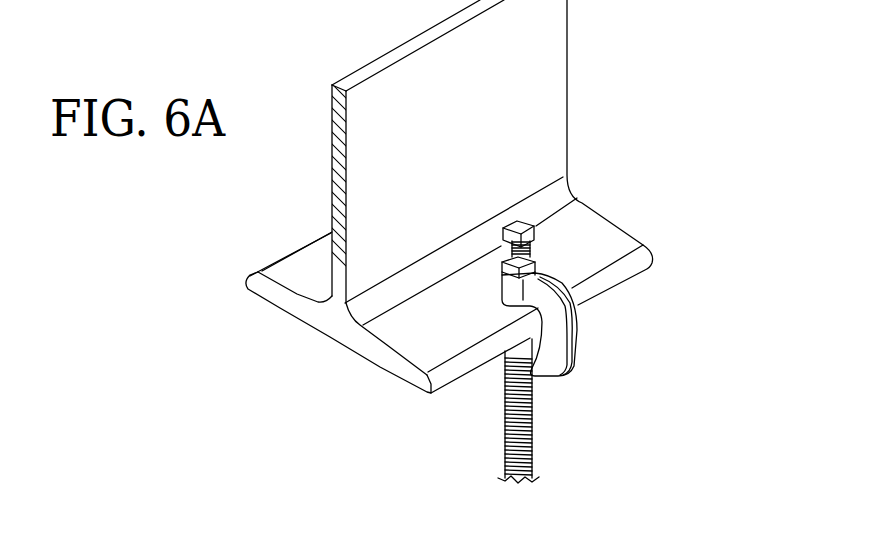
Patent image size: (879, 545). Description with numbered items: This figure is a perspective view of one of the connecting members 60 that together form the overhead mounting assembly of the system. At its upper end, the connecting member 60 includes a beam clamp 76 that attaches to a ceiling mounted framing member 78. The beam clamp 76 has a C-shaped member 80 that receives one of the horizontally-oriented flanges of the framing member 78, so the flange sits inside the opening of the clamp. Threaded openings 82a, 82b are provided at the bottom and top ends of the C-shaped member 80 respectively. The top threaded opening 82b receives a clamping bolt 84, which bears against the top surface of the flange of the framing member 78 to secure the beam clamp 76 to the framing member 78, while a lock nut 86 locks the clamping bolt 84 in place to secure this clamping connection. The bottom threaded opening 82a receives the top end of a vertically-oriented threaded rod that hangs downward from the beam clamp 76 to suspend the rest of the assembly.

The connecting member 60 is at (607, 168).
The ceiling mounted framing member 78 is at (481, 115).
The beam clamp 76 is at (585, 333).
The C-shaped member 80 is at (578, 351).
The clamping bolt 84 is at (518, 222).
The lock nut 86 is at (528, 264).
The top threaded opening 82b is at (503, 288).
The bottom threaded opening 82a is at (517, 350).